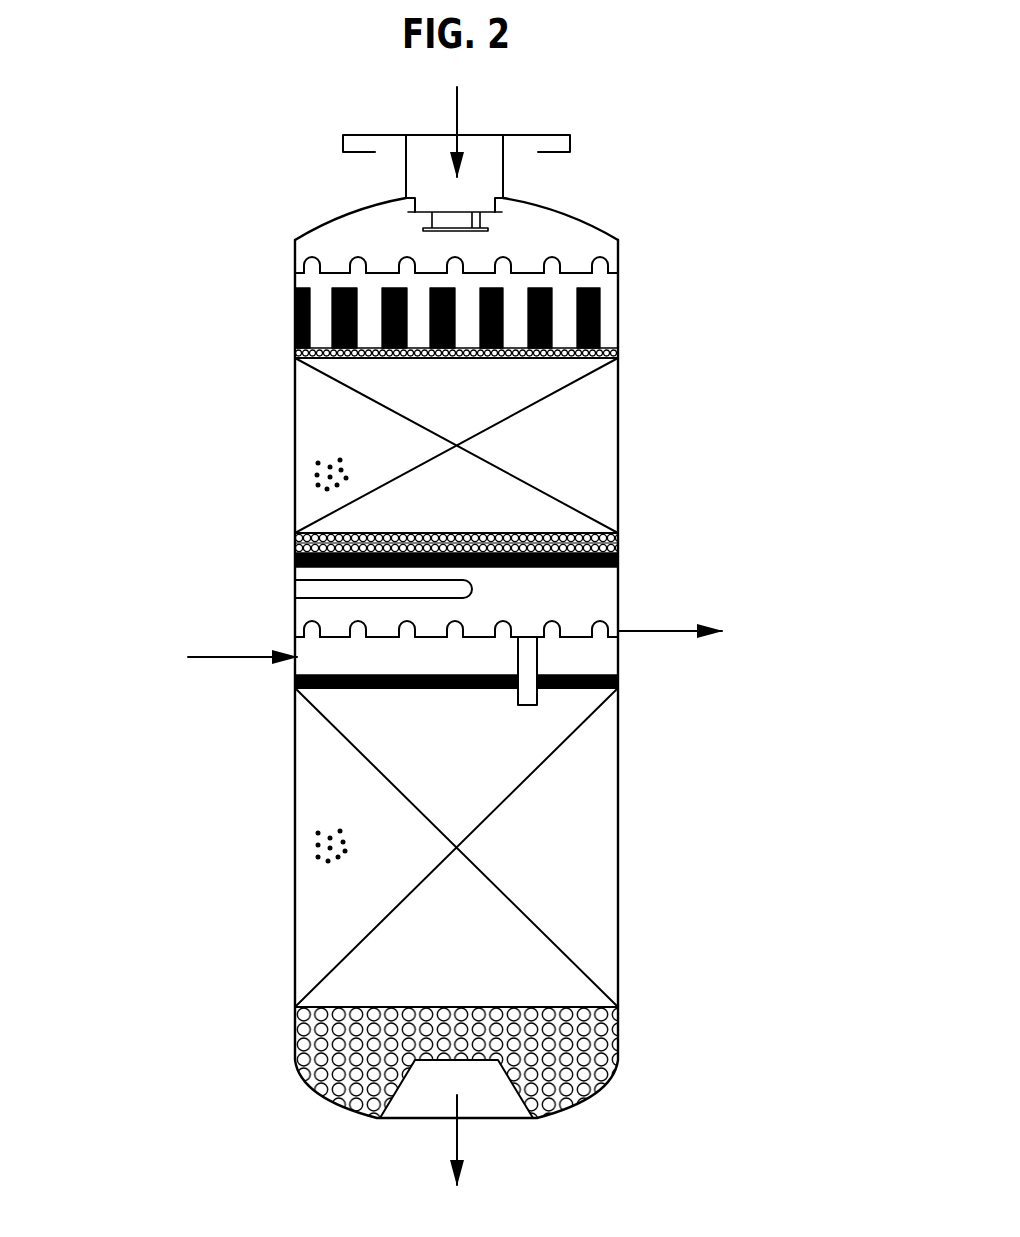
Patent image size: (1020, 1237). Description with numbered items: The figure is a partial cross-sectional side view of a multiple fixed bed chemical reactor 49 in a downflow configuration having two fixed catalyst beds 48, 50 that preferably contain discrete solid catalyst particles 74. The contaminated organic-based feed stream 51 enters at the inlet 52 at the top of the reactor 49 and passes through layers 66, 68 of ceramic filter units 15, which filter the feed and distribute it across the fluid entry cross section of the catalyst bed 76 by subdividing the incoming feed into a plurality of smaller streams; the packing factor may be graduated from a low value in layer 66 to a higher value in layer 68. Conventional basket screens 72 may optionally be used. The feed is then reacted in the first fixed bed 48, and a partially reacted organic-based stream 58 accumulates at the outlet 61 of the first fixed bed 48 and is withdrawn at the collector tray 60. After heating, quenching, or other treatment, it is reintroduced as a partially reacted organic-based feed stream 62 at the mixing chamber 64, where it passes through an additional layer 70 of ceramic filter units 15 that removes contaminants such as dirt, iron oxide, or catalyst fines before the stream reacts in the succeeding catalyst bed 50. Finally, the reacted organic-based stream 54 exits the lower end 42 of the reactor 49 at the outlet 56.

The ceramic filter units 15 is at (603, 316).
The lower end 42 is at (622, 1000).
The first fixed bed 48 is at (557, 465).
The multiple fixed bed chemical reactor 49 is at (573, 205).
The succeeding catalyst bed 50 is at (557, 825).
The contaminated organic-based feed stream 51 is at (458, 103).
The inlet 52 is at (445, 208).
The reacted organic-based stream 54 is at (458, 1140).
The outlet 56 is at (442, 1068).
The partially reacted organic-based stream 58 is at (677, 630).
The collector tray 60 is at (323, 633).
The outlet 61 is at (618, 636).
The partially reacted organic-based feed stream 62 is at (223, 652).
The mixing chamber 64 is at (337, 657).
The layer of ceramic filter units 66 is at (330, 315).
The layer of ceramic filter units 68 is at (297, 355).
The additional layer of ceramic filter units 70 is at (352, 690).
The basket screens 72 is at (558, 302).
The discrete solid catalyst particles 74 is at (318, 475).
The fluid entry cross section of the catalyst bed 76 is at (352, 363).